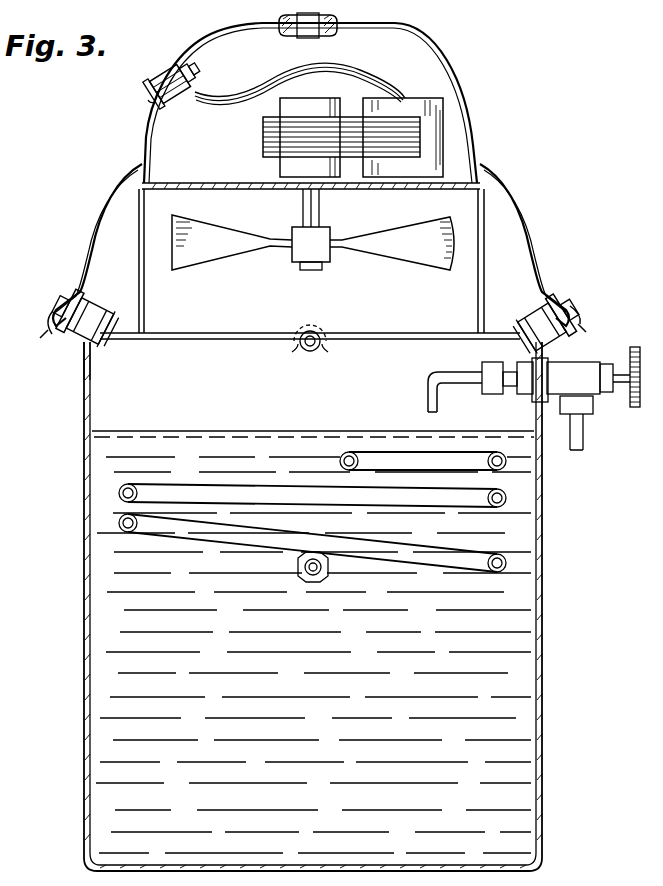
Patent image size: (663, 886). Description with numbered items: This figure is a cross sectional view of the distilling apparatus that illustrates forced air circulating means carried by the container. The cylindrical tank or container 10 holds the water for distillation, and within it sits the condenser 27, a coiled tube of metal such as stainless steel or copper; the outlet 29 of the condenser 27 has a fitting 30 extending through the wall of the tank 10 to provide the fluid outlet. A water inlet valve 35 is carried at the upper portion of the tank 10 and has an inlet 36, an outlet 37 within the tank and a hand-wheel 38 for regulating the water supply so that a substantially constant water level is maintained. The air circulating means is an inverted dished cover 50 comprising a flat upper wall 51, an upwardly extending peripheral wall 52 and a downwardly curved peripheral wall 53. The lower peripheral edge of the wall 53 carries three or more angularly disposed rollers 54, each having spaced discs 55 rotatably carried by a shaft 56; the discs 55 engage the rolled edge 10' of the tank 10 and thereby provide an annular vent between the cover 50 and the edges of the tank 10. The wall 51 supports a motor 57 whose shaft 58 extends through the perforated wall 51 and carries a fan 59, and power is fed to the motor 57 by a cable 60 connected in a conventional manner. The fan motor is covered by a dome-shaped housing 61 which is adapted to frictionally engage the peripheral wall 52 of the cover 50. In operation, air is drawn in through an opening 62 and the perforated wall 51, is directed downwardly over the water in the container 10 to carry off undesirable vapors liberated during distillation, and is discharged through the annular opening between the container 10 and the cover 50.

The tank 10 is at (288, 606).
The rolled edge 10' is at (64, 380).
The condenser 27 is at (205, 548).
The outlet 29 is at (308, 586).
The fitting 30 is at (335, 567).
The water inlet valve 35 is at (592, 360).
The inlet 36 is at (588, 450).
The outlet 37 is at (428, 390).
The hand-wheel 38 is at (636, 408).
The inverted dished cover 50 is at (538, 232).
The flat upper wall 51 is at (194, 199).
The upwardly extending peripheral wall 52 is at (150, 182).
The downwardly curved peripheral wall 53 is at (526, 204).
The rollers 54 is at (112, 354).
The discs 55 is at (92, 316).
The shaft 56 is at (54, 342).
The motor 57 is at (445, 127).
The shaft 58 is at (320, 217).
The fan 59 is at (388, 254).
The cable 60 is at (148, 100).
The dome-shaped housing 61 is at (440, 65).
The opening 62 is at (290, 42).